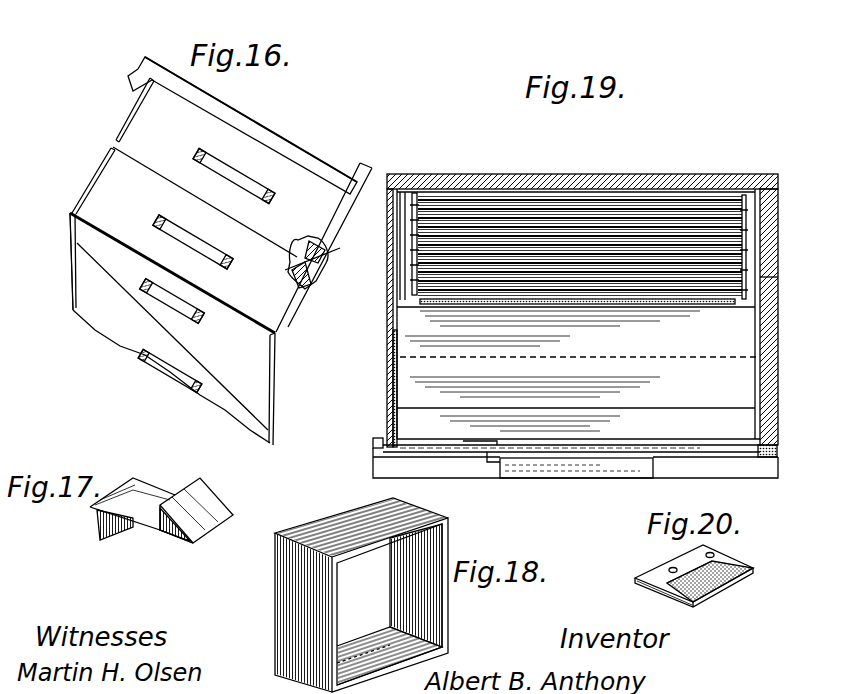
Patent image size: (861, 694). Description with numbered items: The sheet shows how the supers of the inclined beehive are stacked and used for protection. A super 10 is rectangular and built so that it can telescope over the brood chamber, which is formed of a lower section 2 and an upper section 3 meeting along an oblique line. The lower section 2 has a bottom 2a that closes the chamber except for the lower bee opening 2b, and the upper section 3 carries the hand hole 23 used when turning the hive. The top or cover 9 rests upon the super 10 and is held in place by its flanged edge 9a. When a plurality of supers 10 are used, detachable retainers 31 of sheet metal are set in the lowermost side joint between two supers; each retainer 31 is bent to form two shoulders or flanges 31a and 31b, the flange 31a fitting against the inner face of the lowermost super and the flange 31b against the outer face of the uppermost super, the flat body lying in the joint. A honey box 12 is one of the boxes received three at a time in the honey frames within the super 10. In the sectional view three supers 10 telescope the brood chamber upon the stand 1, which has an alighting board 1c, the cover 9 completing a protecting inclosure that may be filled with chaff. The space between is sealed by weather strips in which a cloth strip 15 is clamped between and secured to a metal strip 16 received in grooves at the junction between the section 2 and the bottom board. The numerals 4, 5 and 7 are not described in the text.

In FIG. 19, the stand 1 is at (373, 472).
In FIG. 19, the alighting board 1c is at (373, 443).
In FIG. 16, the lower section of brood chamber 2 is at (72, 282).
In FIG. 19, the lower section of brood chamber 2 is at (576, 422).
In FIG. 19, the bottom 2a is at (448, 452).
In FIG. 19, the lower bee opening 2b is at (491, 458).
In FIG. 16, the upper section of brood chamber 3 is at (262, 357).
In FIG. 19, the upper section of brood chamber 3 is at (398, 244).
In FIG. 19, the louver stack 4 is at (410, 272).
In FIG. 19, the left louver support 5 is at (415, 193).
In FIG. 19, the right louver support 7 is at (745, 205).
In FIG. 16, the top or cover 9 is at (275, 133).
In FIG. 19, the top or cover 9 is at (525, 174).
In FIG. 16, the flanged edge 9a is at (137, 72).
In FIG. 16, the super 10 is at (125, 115).
In FIG. 19, the super 10 is at (387, 213).
In FIG. 18, the honey box 12 is at (276, 593).
In FIG. 19, the cloth strip 15 is at (393, 400).
In FIG. 20, the cloth strip 15 is at (715, 590).
In FIG. 20, the metal strip 16 is at (650, 578).
In FIG. 16, the hand hole 23 is at (168, 306).
In FIG. 16, the retainer 31 is at (310, 245).
In FIG. 17, the retainer 31 is at (160, 493).
In FIG. 16, the flange 31a is at (305, 278).
In FIG. 17, the flange 31a is at (98, 525).
In FIG. 16, the flange 31b is at (318, 262).
In FIG. 17, the flange 31b is at (156, 522).